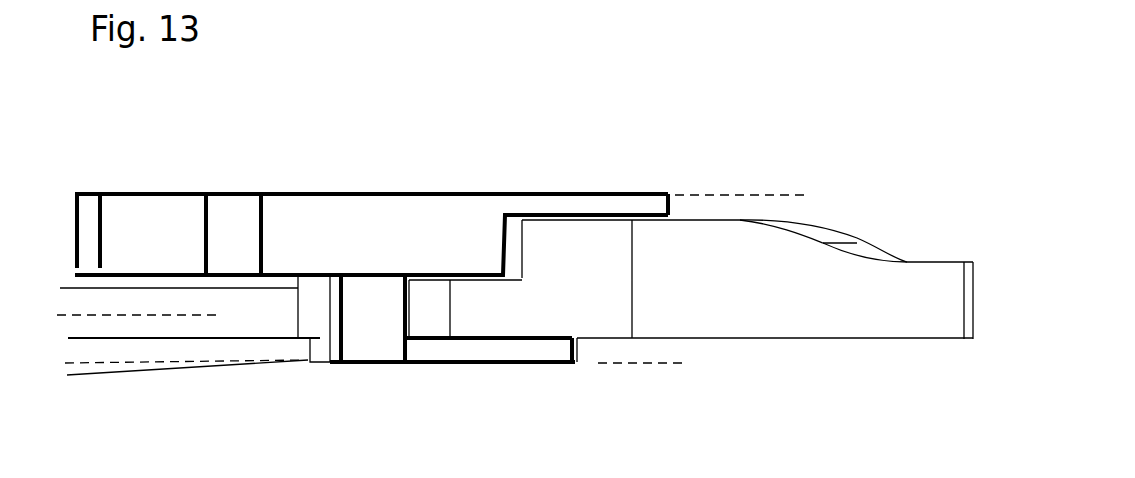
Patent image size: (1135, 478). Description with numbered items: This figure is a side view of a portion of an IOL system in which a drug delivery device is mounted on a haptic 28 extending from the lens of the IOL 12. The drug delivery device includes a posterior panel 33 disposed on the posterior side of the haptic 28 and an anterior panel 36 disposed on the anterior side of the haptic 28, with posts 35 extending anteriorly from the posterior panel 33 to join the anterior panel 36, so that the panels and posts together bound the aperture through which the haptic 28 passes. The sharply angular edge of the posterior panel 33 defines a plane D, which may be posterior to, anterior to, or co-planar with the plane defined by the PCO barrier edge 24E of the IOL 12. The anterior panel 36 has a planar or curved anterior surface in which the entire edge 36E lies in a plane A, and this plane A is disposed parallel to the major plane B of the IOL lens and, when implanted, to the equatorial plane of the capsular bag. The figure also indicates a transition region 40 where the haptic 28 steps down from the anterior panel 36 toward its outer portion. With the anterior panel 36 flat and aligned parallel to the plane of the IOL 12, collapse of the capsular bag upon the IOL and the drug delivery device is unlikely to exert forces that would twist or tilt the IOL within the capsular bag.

The anterior panel 36 is at (447, 197).
The edge of anterior panel 36E is at (77, 192).
The transition portion 40 is at (525, 242).
The haptic 28 is at (877, 339).
The post 35 is at (372, 338).
The posterior panel 33 is at (513, 365).
The PCO barrier edge 24E is at (173, 338).
The IOL 12 is at (112, 375).
The plane A is at (754, 195).
The major plane of the IOL lens B is at (153, 315).
The plane D is at (654, 363).